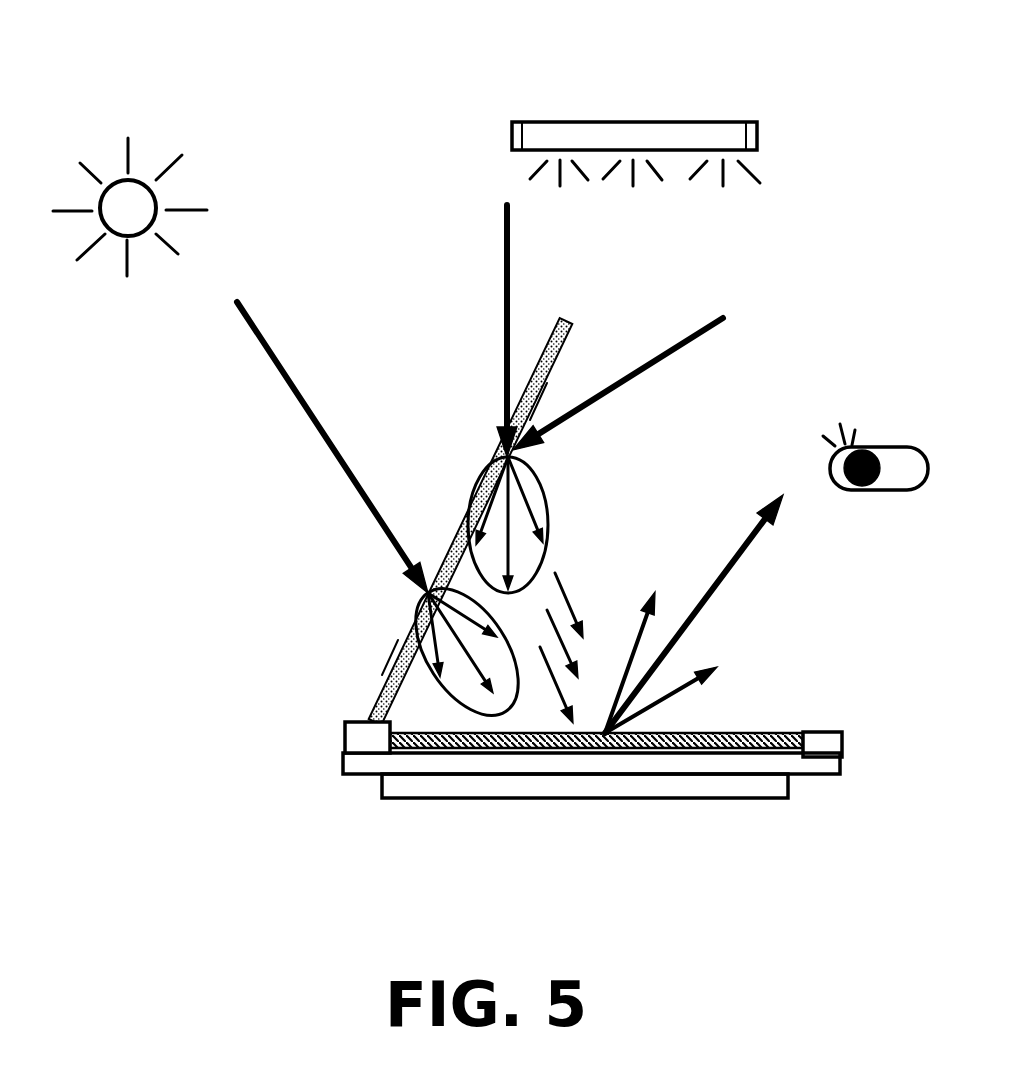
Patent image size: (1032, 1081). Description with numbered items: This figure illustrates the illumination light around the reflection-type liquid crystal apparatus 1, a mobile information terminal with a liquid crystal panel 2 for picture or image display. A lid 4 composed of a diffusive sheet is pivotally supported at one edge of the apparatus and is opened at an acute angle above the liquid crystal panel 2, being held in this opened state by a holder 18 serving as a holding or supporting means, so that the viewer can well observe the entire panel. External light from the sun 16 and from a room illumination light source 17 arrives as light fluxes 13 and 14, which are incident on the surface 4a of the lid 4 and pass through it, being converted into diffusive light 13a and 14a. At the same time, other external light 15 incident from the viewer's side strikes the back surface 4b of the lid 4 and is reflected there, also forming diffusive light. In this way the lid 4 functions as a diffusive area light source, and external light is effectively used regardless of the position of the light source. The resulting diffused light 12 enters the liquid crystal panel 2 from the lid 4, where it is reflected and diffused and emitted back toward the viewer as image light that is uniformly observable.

The reflection-type liquid crystal apparatus 1 is at (618, 800).
The liquid crystal panel 2 is at (740, 733).
The lid 4 is at (477, 478).
The surface of the lid 4a is at (398, 640).
The back surface of the lid 4b is at (547, 383).
The diffused light 12 is at (570, 595).
The light flux from the sun 13 is at (283, 370).
The diffusive light 13a is at (430, 683).
The light flux from the room illumination light source 14 is at (503, 280).
The diffusive light 14a is at (548, 510).
The external light 15 is at (723, 318).
The sun 16 is at (133, 160).
The room illumination light source 17 is at (672, 120).
The holder 18 is at (343, 740).